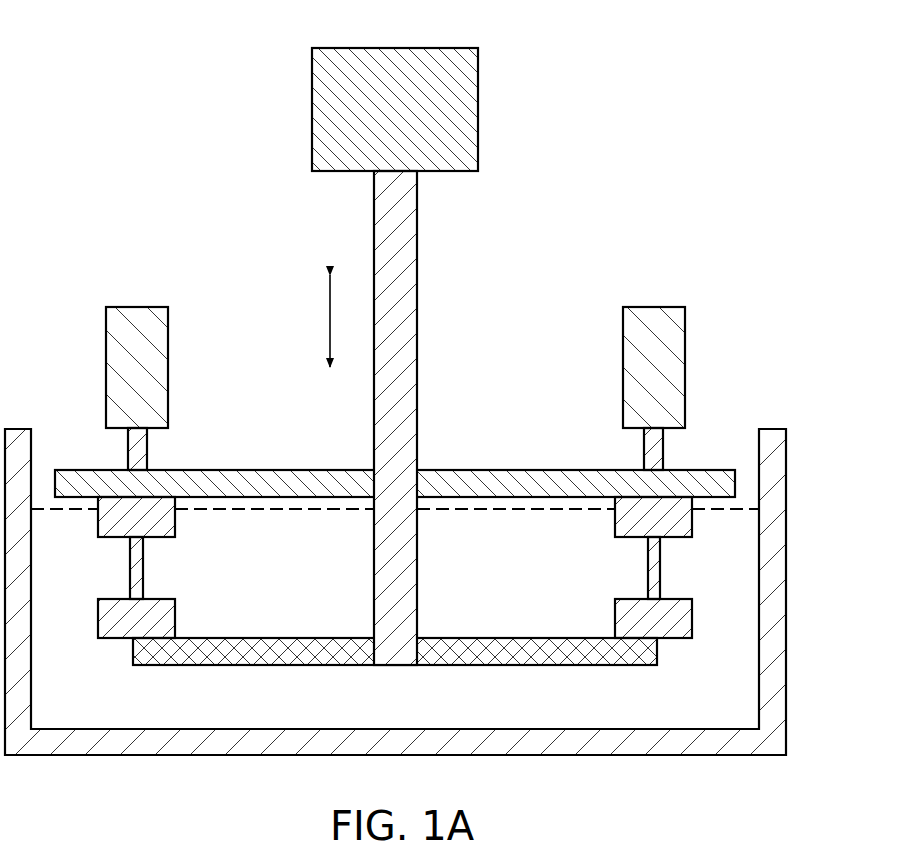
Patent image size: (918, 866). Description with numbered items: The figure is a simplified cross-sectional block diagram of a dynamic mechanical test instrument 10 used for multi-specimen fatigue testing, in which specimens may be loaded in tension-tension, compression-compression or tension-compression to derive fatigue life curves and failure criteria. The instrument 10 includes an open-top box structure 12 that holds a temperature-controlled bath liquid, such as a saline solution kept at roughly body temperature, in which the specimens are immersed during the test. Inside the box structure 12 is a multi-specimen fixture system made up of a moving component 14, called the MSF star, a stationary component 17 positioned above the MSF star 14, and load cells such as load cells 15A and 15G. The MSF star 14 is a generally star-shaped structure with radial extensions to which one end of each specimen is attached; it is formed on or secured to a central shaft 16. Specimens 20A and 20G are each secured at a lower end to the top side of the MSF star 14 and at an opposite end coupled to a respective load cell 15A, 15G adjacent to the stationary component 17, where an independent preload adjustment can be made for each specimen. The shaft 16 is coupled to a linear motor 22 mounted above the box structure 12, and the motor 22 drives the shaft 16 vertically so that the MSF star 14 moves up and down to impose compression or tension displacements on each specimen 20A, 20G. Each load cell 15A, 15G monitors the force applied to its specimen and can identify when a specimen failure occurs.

The dynamic mechanical test instrument 10 is at (108, 98).
The open-top box structure 12 is at (786, 592).
The moving component (MSF star) 14 is at (292, 676).
The load cell 15A is at (685, 366).
The load cell 15G is at (106, 366).
The central shaft 16 is at (417, 320).
The stationary component 17 is at (247, 470).
The specimen 20A is at (660, 558).
The specimen 20G is at (130, 558).
The linear motor 22 is at (478, 110).